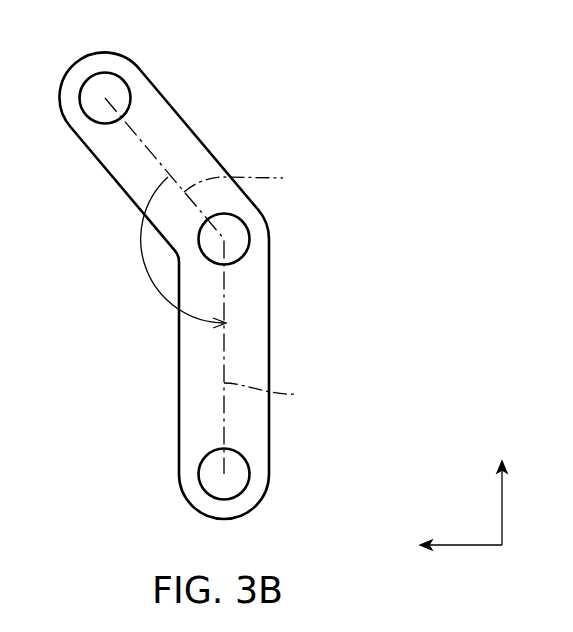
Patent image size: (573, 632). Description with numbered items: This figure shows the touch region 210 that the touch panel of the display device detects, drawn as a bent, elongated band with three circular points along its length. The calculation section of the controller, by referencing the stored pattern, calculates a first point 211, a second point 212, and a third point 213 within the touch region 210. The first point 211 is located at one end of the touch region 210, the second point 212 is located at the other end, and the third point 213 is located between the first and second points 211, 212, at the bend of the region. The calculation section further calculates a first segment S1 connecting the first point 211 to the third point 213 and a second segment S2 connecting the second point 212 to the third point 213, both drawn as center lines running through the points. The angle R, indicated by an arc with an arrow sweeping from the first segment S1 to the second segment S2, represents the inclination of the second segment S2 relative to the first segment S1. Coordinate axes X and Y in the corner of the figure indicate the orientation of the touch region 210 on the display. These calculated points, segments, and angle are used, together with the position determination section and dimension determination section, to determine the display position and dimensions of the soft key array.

The touch region 210 is at (186, 124).
The first point 211 is at (126, 82).
The second point 212 is at (249, 468).
The third point 213 is at (244, 255).
The first segment S1 is at (249, 177).
The second segment S2 is at (278, 397).
The angle R is at (147, 275).
The X axis X is at (502, 487).
The Y axis Y is at (451, 545).